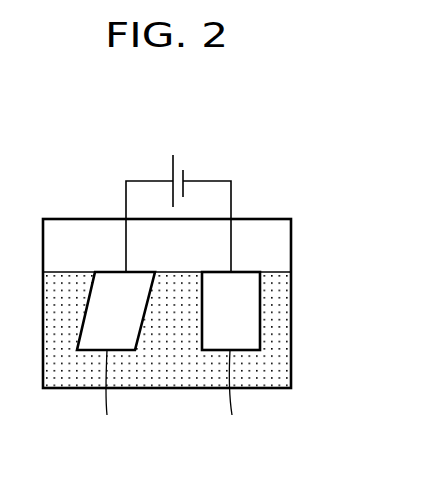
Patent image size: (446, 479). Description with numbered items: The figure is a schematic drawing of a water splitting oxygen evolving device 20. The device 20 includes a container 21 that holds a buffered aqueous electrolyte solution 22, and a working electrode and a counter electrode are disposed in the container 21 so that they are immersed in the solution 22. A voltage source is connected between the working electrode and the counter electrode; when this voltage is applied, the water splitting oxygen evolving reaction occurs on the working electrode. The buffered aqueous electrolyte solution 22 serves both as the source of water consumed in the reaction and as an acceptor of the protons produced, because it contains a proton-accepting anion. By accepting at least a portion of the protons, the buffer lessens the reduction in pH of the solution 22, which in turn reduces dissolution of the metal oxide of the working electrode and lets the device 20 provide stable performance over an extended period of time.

The water splitting oxygen evolving device 20 is at (218, 289).
The container 21 is at (210, 303).
The buffered aqueous electrolyte solution 22 is at (278, 358).